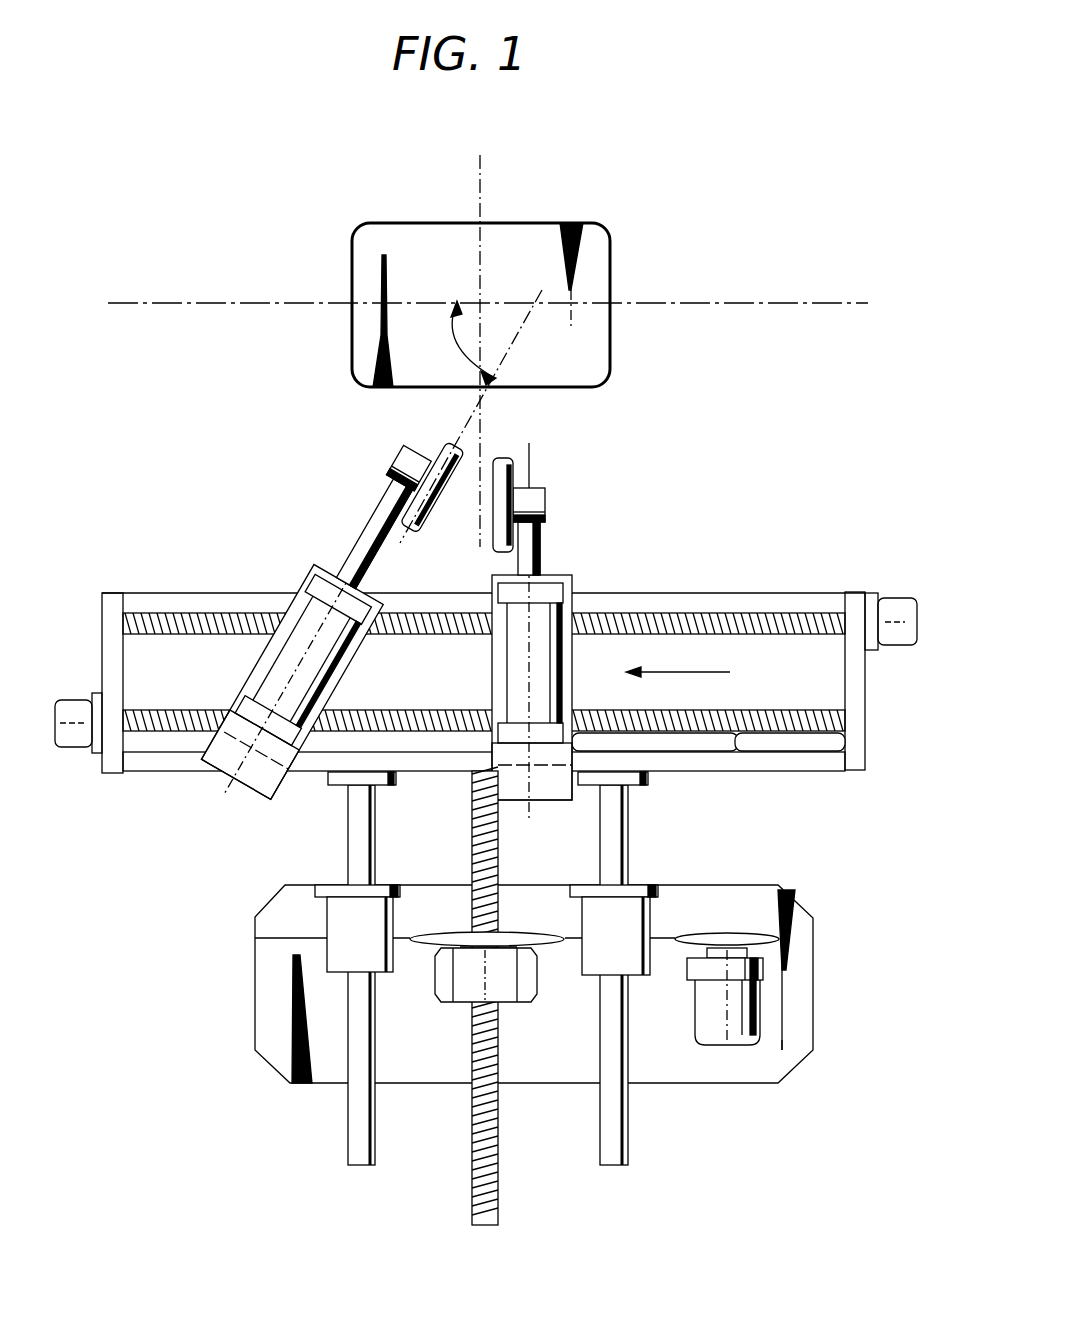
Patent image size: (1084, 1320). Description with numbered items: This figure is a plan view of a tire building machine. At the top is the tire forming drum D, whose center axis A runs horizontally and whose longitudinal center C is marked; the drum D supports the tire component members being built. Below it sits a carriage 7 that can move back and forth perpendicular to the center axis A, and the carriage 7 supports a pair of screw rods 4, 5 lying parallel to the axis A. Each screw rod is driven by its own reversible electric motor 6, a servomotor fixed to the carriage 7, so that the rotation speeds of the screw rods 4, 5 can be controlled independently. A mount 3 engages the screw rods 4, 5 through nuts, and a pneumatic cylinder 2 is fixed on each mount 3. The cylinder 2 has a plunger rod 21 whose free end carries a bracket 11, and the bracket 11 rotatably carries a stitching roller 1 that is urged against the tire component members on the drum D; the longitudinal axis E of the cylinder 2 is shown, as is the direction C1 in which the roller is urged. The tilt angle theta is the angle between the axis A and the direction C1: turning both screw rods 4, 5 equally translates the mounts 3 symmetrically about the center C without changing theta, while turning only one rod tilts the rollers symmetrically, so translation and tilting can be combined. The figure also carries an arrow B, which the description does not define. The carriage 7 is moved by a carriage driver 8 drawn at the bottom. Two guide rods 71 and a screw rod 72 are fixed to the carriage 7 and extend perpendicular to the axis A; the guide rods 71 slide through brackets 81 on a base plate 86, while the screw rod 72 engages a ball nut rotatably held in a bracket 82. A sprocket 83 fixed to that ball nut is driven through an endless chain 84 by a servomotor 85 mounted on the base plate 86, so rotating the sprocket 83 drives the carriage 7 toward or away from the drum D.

The stitching roller 1 is at (500, 457).
The bracket 11 is at (550, 498).
The pneumatic cylinder 2 is at (538, 625).
The plunger rod 21 is at (545, 536).
The mount 3 is at (545, 783).
The screw rod 4 is at (716, 625).
The screw rod 5 is at (736, 744).
The reversible electric motor 6 is at (887, 598).
The carriage 7 is at (857, 765).
The guide rod 71 is at (355, 820).
The screw rod 72 is at (470, 822).
The carriage driver 8 is at (675, 1100).
The bracket 81 is at (328, 935).
The bracket 82 is at (512, 1000).
The sprocket 83 is at (418, 948).
The endless chain 84 is at (658, 946).
The motor 85 is at (735, 1045).
The base plate 86 is at (800, 945).
The center axis A is at (760, 300).
The feed direction B is at (678, 658).
The longitudinal center C is at (482, 178).
The urging direction C1 is at (516, 338).
The tire forming drum D is at (578, 222).
The longitudinal axis E is at (530, 463).
The tilt angle theta is at (468, 343).